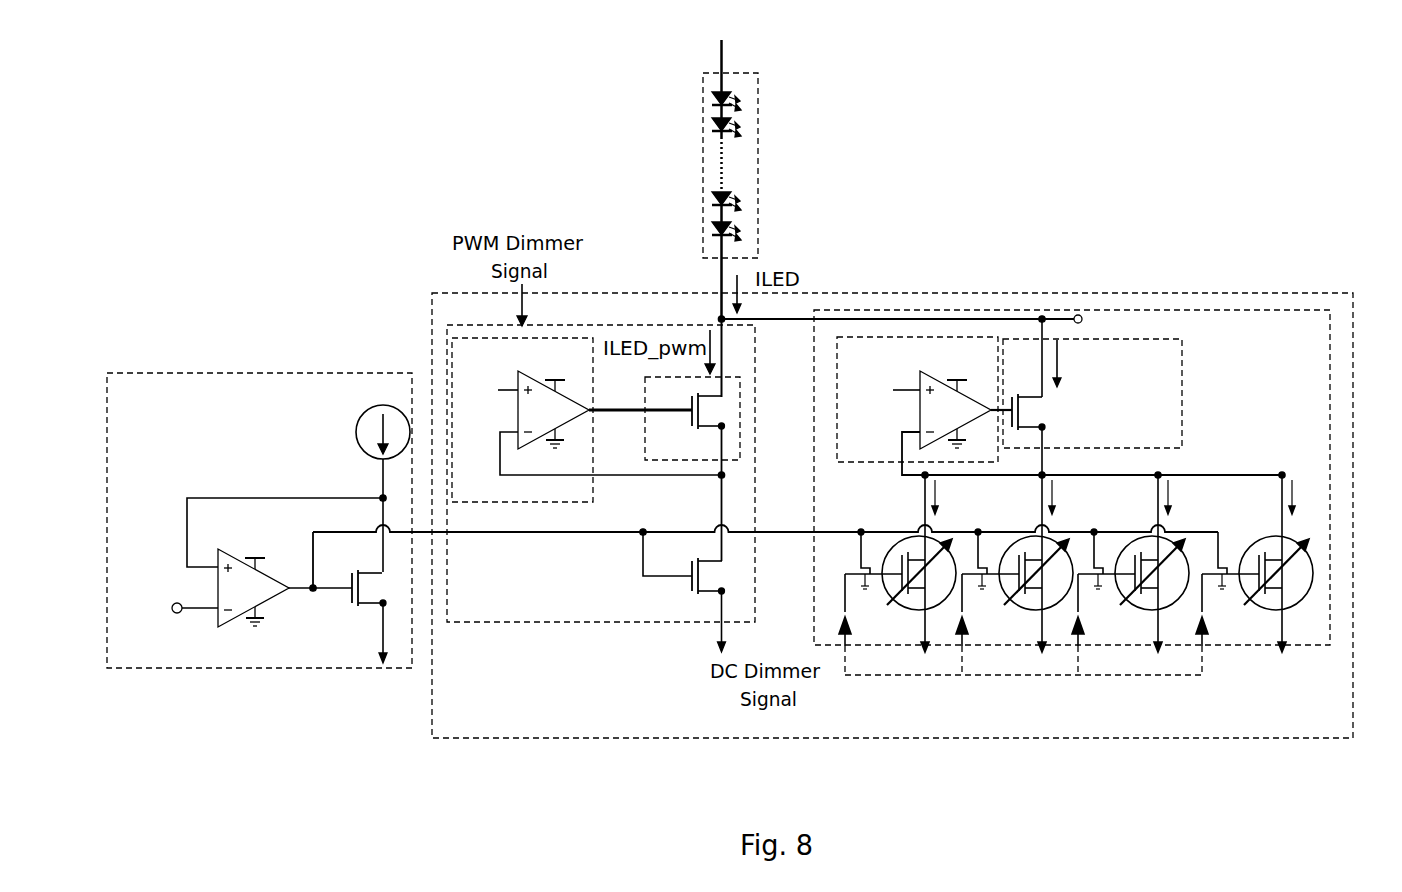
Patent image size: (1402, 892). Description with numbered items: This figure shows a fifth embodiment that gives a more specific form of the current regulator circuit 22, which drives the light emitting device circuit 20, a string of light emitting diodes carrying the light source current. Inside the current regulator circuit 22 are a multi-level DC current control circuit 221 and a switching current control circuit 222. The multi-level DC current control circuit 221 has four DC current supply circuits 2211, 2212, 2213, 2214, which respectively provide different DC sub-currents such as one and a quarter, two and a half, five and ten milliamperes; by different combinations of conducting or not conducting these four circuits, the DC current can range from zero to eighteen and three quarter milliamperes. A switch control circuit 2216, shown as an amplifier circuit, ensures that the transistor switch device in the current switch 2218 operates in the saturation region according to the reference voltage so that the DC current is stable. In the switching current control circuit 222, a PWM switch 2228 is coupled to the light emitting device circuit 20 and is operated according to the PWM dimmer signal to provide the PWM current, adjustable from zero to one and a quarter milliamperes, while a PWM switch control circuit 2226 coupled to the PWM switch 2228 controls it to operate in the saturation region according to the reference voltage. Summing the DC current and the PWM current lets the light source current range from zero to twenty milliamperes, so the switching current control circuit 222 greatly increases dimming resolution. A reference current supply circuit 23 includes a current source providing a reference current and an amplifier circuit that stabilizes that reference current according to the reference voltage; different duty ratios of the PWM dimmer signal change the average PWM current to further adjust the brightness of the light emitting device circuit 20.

The light emitting device circuit 20 is at (755, 104).
The current regulator circuit 22 is at (1170, 293).
The reference current supply circuit 23 is at (144, 651).
The multi-level DC current control circuit 221 is at (1308, 343).
The switching current control circuit 222 is at (493, 606).
The DC current supply circuit 2211 is at (1262, 539).
The DC current supply circuit 2212 is at (1132, 542).
The DC current supply circuit 2213 is at (1015, 542).
The DC current supply circuit 2214 is at (900, 541).
The switch control circuit 2216 is at (903, 365).
The current switch 2218 is at (1175, 443).
The PWM switch control circuit 2226 is at (502, 496).
The PWM switch 2228 is at (700, 456).